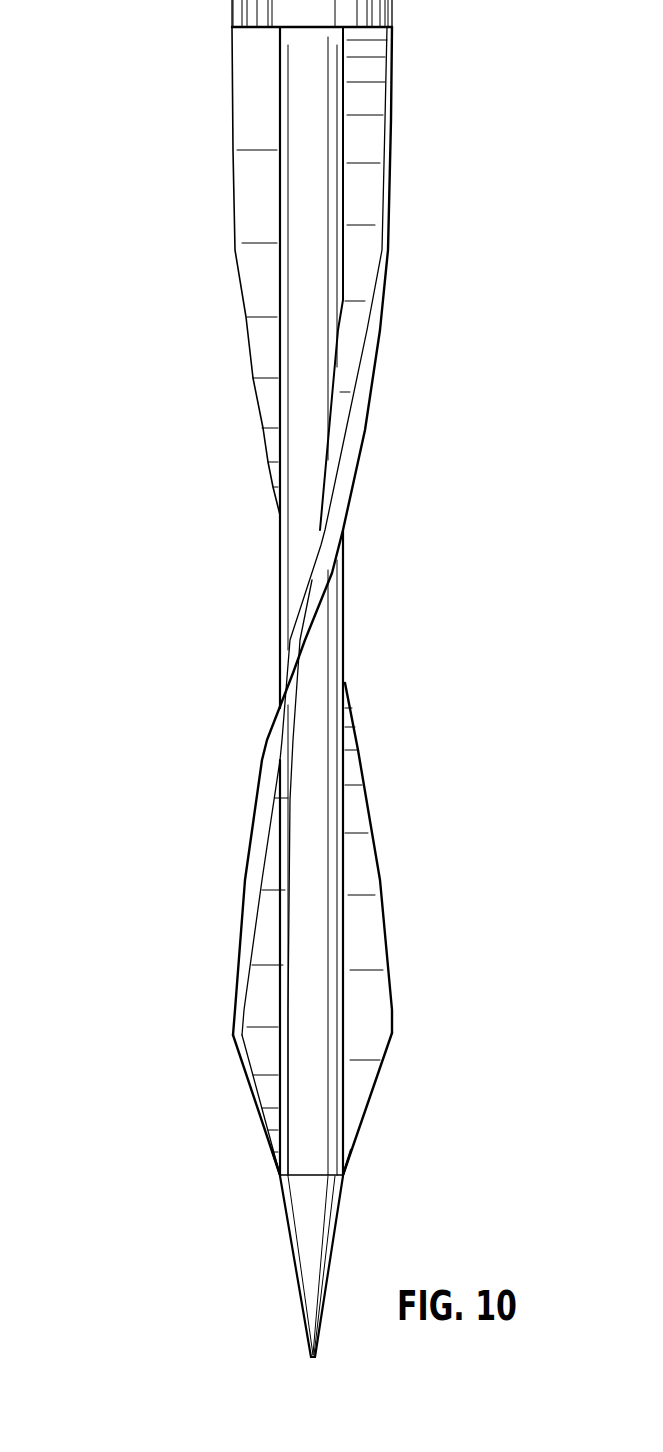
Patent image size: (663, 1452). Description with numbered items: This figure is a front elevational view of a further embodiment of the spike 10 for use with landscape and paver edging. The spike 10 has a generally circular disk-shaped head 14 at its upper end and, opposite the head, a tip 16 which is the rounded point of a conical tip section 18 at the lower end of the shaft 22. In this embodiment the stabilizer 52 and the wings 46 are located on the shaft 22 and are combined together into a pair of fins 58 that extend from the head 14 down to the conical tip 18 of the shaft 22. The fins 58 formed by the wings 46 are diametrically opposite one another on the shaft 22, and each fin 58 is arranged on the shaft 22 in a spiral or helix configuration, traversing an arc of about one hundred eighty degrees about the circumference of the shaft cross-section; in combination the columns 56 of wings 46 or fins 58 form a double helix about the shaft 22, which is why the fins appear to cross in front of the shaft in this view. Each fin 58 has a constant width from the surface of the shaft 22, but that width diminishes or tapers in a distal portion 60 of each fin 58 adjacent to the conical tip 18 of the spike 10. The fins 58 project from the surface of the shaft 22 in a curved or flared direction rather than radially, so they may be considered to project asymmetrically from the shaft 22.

The spike 10 is at (94, 251).
The head 14 is at (227, 2).
The tip 16 is at (316, 1357).
The conical tip section 18 is at (296, 1240).
The shaft 22 is at (340, 615).
The wings 46 is at (256, 811).
The stabilizer 52 is at (237, 52).
The columns 56 is at (258, 1162).
The fins 58 is at (232, 228).
The distal portion 60 is at (260, 1097).